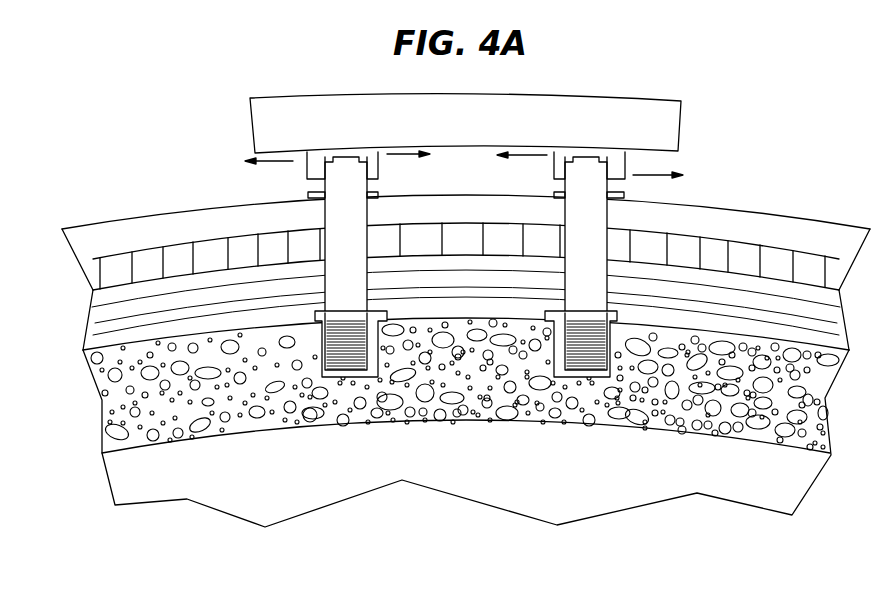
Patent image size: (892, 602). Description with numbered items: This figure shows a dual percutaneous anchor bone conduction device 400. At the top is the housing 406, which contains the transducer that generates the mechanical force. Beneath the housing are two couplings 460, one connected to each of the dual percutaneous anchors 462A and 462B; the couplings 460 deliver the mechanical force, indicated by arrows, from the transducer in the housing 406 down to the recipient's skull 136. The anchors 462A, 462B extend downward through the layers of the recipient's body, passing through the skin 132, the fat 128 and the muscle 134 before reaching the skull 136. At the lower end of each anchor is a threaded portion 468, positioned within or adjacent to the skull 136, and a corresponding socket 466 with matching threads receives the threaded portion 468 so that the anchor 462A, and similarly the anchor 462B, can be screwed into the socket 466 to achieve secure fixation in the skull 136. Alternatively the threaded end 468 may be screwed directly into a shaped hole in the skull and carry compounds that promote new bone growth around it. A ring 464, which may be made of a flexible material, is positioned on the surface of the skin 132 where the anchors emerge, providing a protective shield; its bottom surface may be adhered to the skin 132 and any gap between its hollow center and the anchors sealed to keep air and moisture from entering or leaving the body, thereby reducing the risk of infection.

The bone conduction device 400 is at (694, 66).
The housing 406 is at (681, 133).
The couplings 460 is at (626, 158).
The percutaneous anchor 462A is at (320, 218).
The percutaneous anchor 462B is at (610, 222).
The ring 464 is at (380, 193).
The socket 466 is at (327, 376).
The threaded portion 468 is at (316, 318).
The skin 132 is at (62, 230).
The fat 128 is at (84, 278).
The muscle 134 is at (88, 328).
The skull 136 is at (99, 430).